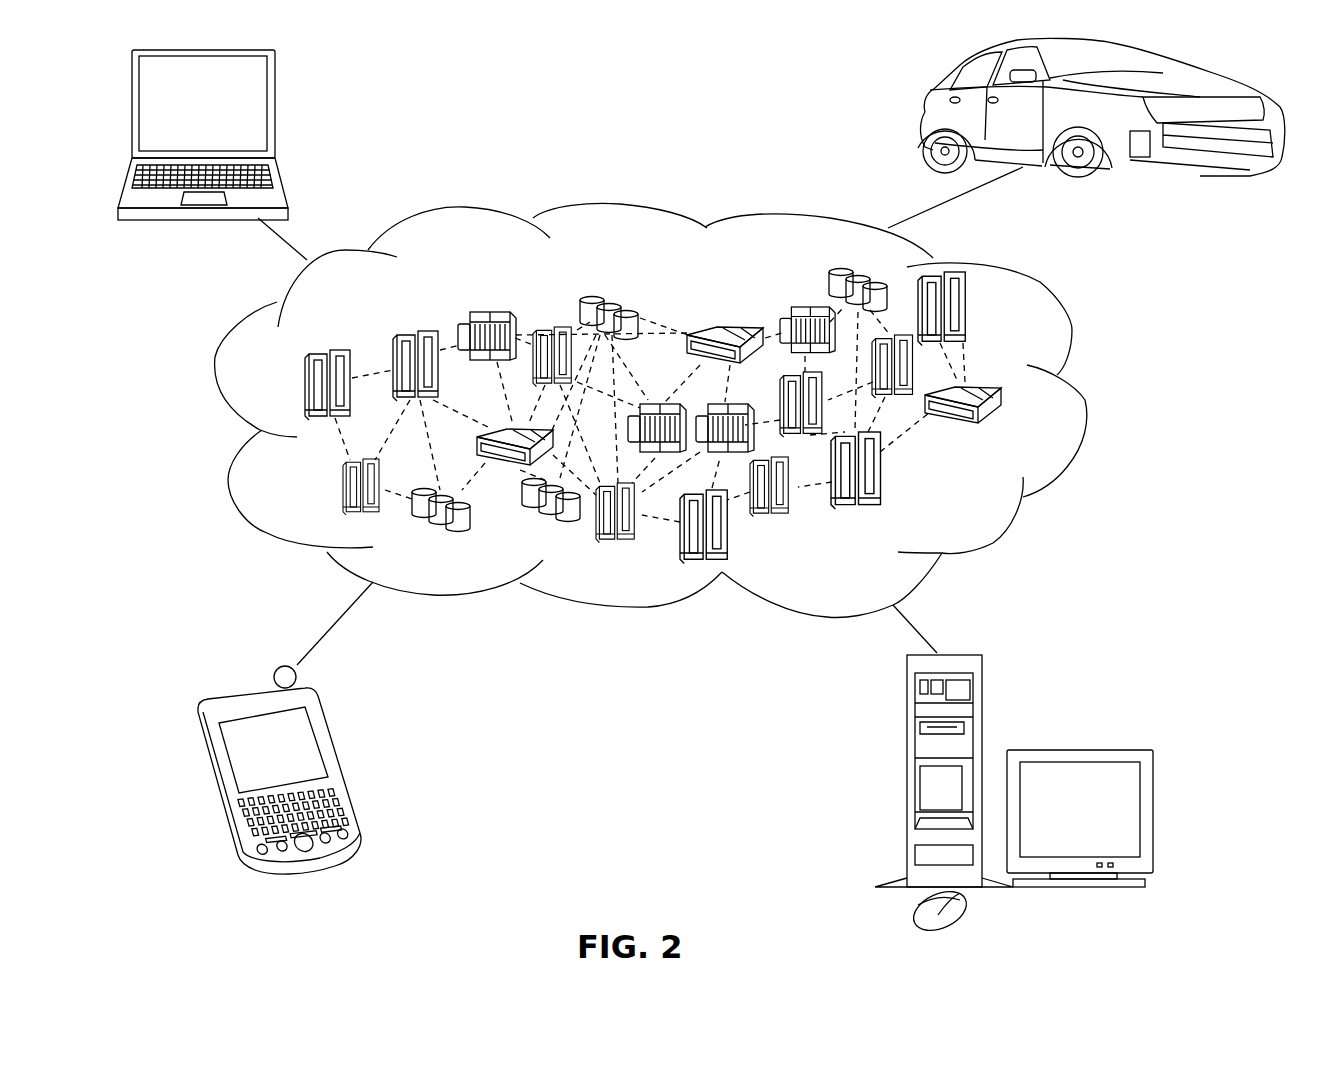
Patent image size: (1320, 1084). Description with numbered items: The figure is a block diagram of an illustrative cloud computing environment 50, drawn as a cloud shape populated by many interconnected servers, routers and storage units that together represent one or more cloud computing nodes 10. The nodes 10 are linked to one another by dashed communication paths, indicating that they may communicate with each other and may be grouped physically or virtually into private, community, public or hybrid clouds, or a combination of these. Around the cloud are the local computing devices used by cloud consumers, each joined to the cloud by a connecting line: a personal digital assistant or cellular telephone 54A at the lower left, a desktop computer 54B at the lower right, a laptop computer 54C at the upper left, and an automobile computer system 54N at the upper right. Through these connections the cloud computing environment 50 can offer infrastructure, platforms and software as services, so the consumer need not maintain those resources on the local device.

The cloud computing nodes 10 is at (988, 503).
The cloud computing environment 50 is at (1078, 400).
The personal digital assistant (PDA) or cellular telephone 54A is at (330, 731).
The desktop computer 54B is at (905, 716).
The laptop computer 54C is at (276, 90).
The automobile computer system 54N is at (920, 103).